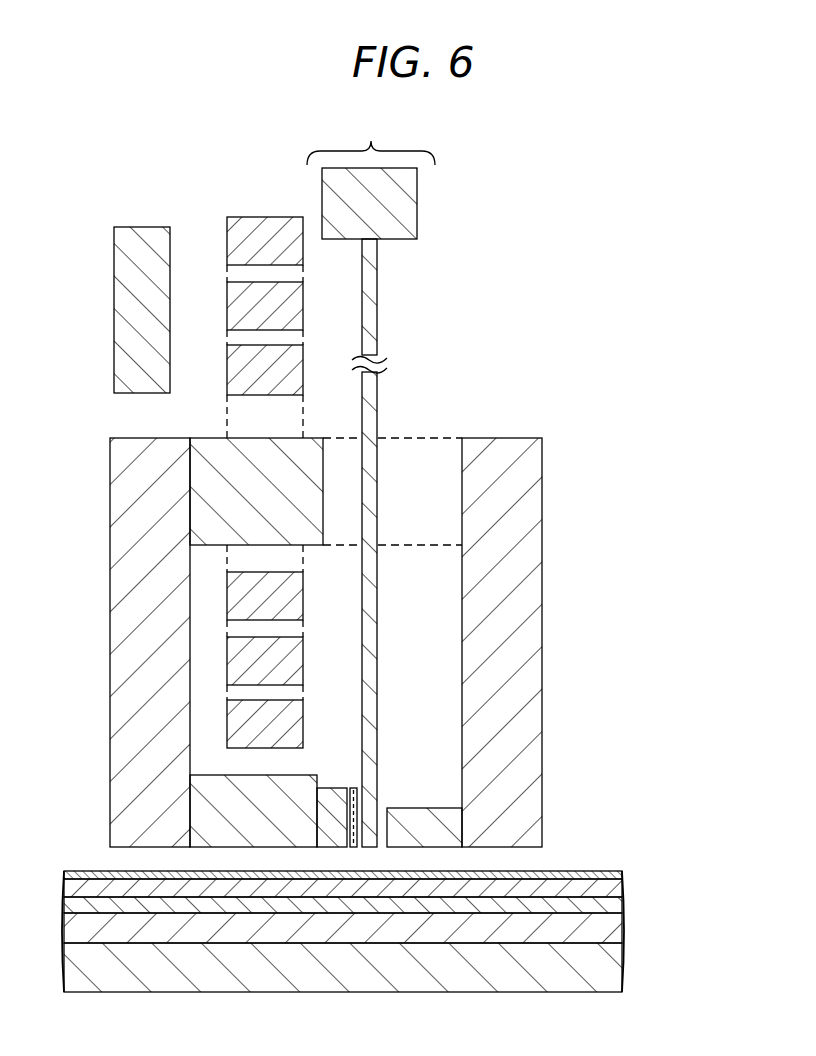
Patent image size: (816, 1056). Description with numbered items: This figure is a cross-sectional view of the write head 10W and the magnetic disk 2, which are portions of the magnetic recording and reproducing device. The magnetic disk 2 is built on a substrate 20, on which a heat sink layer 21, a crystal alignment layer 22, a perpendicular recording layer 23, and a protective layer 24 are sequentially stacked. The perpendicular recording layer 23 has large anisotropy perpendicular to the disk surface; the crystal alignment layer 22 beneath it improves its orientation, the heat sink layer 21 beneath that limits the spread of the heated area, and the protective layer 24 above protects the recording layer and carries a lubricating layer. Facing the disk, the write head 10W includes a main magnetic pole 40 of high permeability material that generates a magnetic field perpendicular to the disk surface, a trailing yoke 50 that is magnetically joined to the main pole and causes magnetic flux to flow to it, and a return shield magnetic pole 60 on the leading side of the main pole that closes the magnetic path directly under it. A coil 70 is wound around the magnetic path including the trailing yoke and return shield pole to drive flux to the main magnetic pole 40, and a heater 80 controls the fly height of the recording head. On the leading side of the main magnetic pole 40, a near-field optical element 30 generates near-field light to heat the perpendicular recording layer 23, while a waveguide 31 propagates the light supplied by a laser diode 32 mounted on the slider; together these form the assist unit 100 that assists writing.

The magnetic disk 2 is at (700, 893).
The write head 10W is at (578, 342).
The substrate 20 is at (624, 961).
The heat sink layer 21 is at (624, 928).
The crystal alignment layer 22 is at (624, 905).
The perpendicular recording layer 23 is at (624, 889).
The protective layer 24 is at (624, 875).
The near-field optical element 30 is at (353, 788).
The waveguide 31 is at (377, 678).
The laser diode 32 is at (418, 208).
The main magnetic pole 40 is at (332, 788).
The trailing yoke 50 is at (118, 630).
The return shield magnetic pole 60 is at (542, 632).
The coil 70 is at (237, 243).
The heater 80 is at (143, 227).
The assist unit 100 is at (371, 138).